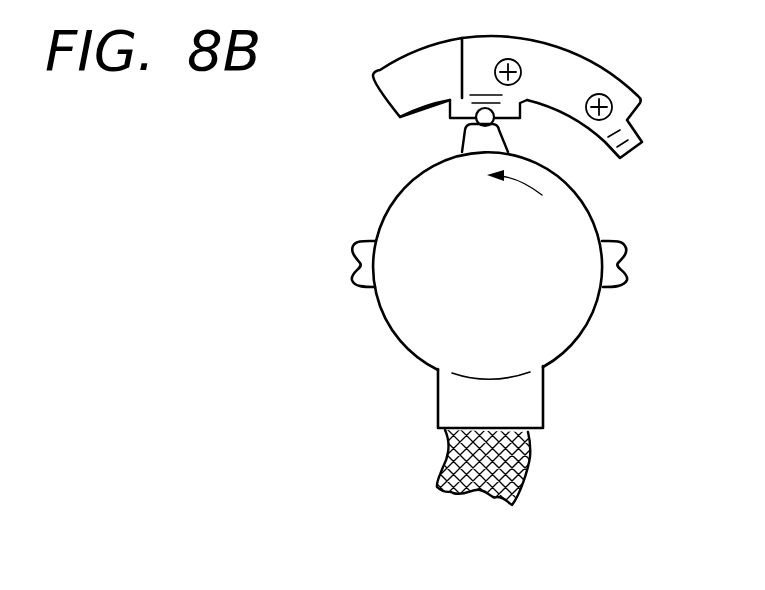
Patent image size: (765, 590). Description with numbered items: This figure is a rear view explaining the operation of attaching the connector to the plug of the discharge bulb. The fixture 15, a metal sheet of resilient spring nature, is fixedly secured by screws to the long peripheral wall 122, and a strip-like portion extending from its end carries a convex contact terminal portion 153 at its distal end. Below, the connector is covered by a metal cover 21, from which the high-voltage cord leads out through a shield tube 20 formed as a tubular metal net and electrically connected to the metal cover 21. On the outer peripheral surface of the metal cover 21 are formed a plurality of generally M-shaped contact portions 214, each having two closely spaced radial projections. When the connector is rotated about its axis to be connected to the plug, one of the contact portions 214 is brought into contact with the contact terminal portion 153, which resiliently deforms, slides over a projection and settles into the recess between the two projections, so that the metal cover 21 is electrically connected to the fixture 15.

The fixture 15 is at (615, 88).
The long peripheral wall 122 is at (407, 63).
The contact terminal portion 153 is at (490, 115).
The metal cover 21 is at (582, 318).
The contact portions 214 is at (470, 140).
The shield tube 20 is at (510, 465).